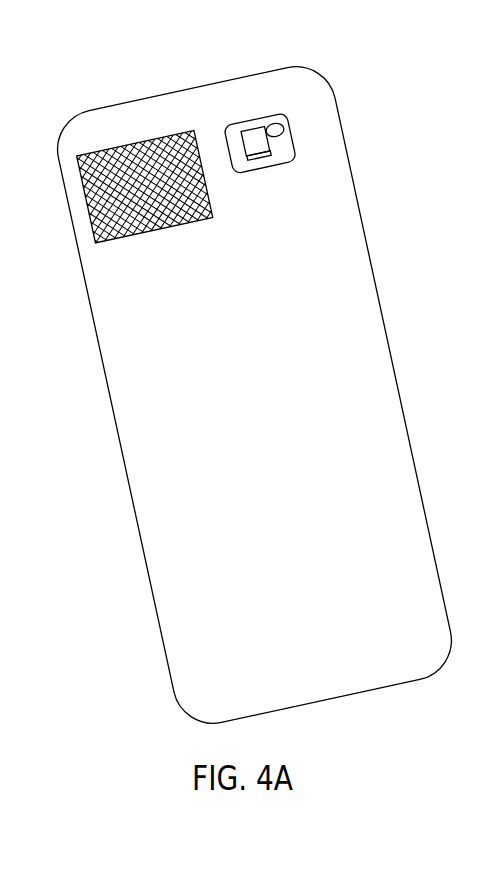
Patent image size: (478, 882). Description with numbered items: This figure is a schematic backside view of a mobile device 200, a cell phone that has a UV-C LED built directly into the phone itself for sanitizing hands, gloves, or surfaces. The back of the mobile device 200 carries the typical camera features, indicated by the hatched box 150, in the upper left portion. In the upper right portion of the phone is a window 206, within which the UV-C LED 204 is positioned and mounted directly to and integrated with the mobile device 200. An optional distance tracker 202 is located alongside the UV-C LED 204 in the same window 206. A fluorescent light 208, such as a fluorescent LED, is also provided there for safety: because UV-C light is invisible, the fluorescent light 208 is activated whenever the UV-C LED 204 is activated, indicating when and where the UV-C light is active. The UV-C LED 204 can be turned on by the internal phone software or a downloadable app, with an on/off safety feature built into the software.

The mobile device 200 is at (317, 288).
The camera features 150 is at (84, 202).
The UV-C LED 204 is at (228, 133).
The window 206 is at (333, 85).
The distance tracker 202 is at (277, 148).
The fluorescent light 208 is at (273, 122).